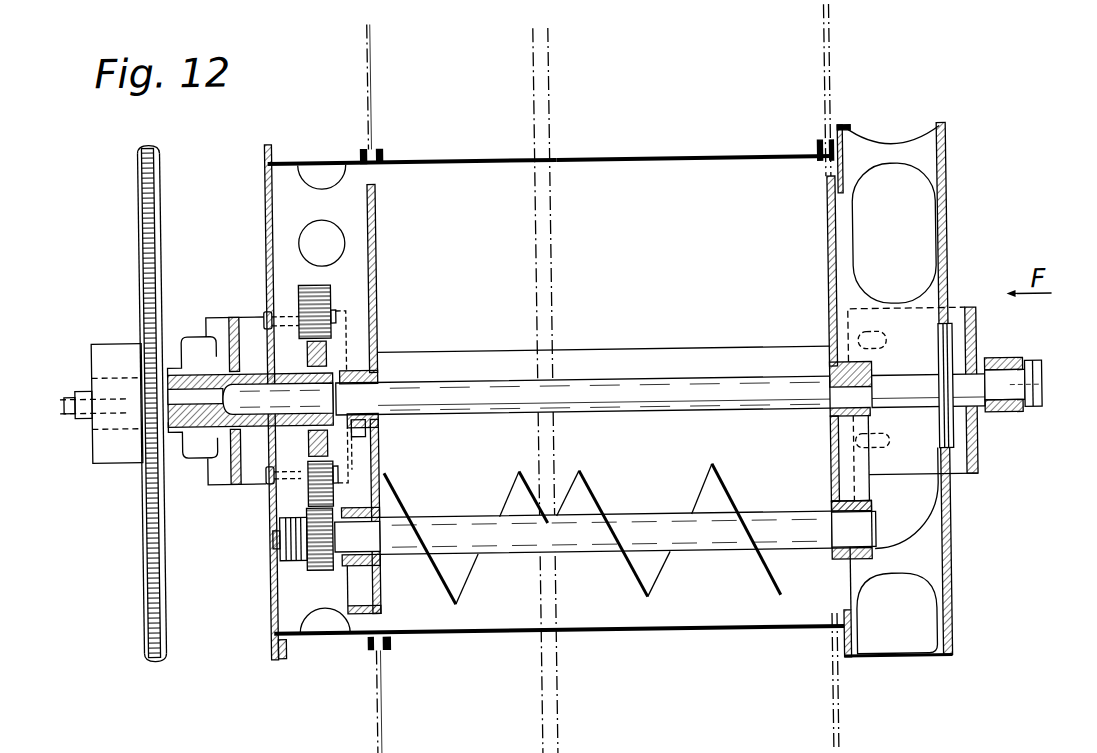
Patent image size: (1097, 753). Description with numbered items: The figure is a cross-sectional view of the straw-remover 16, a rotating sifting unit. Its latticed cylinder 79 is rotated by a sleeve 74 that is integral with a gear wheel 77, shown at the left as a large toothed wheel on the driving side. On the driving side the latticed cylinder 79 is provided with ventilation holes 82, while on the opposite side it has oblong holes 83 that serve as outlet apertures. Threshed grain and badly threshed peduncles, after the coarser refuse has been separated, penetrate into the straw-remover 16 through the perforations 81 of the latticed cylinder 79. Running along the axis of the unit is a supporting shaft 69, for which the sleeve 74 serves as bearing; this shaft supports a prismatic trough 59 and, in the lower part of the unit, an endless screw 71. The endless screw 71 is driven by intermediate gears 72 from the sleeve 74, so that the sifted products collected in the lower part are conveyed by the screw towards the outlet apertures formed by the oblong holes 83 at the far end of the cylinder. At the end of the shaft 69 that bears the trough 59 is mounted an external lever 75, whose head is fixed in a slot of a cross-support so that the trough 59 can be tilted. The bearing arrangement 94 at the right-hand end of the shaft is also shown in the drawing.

The straw-remover 16 is at (573, 152).
The prismatic trough 59 is at (645, 455).
The supporting shaft 69 is at (702, 389).
The endless screw 71 is at (651, 574).
The intermediate gears 72 is at (318, 540).
The sleeve 74 is at (198, 378).
The external lever 75 is at (1033, 377).
The gear wheel 77 is at (152, 239).
The latticed cylinder 79 is at (655, 159).
The perforations 81 is at (488, 156).
The ventilation holes 82 is at (309, 230).
The oblong holes 83 is at (922, 257).
The bearing plate 94 is at (938, 372).